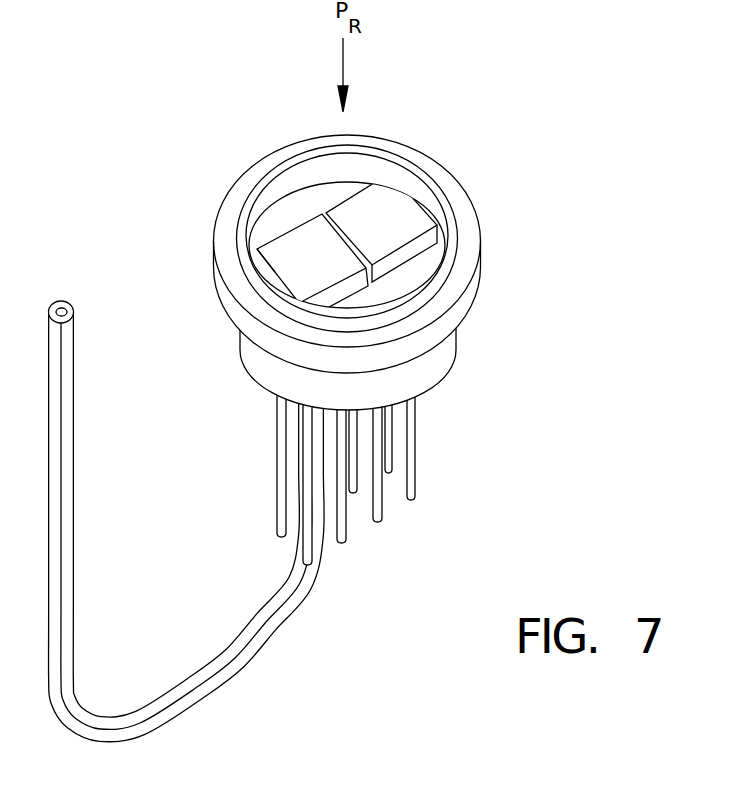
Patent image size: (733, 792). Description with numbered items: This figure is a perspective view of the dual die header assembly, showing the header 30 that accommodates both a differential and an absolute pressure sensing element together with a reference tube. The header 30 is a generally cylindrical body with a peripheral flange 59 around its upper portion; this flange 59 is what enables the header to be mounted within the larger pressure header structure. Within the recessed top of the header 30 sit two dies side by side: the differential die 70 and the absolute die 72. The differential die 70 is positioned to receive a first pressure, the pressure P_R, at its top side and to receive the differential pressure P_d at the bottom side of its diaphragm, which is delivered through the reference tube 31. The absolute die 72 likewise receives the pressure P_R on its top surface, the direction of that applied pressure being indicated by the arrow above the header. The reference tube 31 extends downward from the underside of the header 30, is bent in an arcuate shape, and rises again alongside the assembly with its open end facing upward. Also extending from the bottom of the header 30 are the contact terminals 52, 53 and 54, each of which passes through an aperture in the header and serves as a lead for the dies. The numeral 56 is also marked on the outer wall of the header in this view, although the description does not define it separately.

The header 30 is at (568, 206).
The reference tube 31 is at (288, 615).
The contact terminal 52 is at (278, 500).
The contact terminal 53 is at (386, 515).
The contact terminal 54 is at (418, 472).
The housing flange 56 is at (480, 267).
The peripheral flange 59 is at (438, 303).
The differential die 70 is at (278, 263).
The absolute die 72 is at (387, 190).